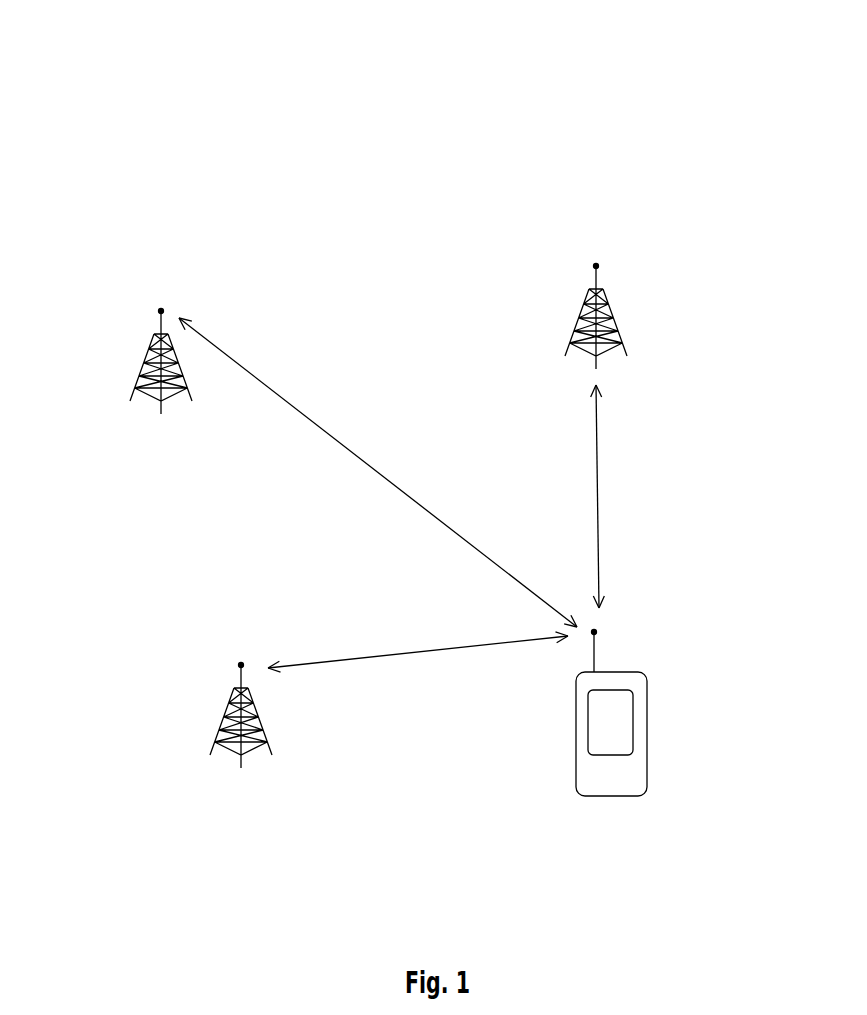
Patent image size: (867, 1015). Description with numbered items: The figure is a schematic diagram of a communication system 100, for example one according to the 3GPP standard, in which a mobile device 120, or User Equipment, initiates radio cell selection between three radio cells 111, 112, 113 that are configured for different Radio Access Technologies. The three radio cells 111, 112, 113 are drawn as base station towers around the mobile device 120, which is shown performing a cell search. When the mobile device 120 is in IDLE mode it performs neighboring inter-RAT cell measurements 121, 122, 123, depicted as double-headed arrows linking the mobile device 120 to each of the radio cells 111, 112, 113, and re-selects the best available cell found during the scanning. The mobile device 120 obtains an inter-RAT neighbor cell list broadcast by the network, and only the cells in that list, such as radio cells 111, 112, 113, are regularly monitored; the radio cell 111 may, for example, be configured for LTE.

The communication system 100 is at (317, 122).
The radio cell 111 is at (131, 348).
The radio cell 112 is at (568, 307).
The radio cell 113 is at (213, 700).
The mobile device 120 is at (667, 679).
The neighboring inter-RAT cell measurement 121 is at (369, 446).
The neighboring inter-RAT cell measurement 122 is at (604, 501).
The neighboring inter-RAT cell measurement 123 is at (420, 643).